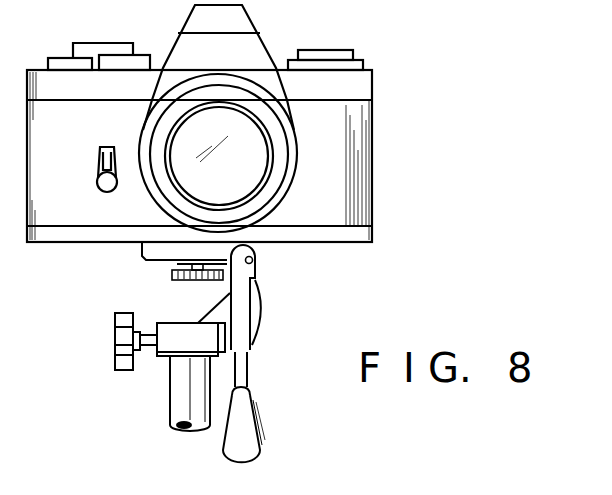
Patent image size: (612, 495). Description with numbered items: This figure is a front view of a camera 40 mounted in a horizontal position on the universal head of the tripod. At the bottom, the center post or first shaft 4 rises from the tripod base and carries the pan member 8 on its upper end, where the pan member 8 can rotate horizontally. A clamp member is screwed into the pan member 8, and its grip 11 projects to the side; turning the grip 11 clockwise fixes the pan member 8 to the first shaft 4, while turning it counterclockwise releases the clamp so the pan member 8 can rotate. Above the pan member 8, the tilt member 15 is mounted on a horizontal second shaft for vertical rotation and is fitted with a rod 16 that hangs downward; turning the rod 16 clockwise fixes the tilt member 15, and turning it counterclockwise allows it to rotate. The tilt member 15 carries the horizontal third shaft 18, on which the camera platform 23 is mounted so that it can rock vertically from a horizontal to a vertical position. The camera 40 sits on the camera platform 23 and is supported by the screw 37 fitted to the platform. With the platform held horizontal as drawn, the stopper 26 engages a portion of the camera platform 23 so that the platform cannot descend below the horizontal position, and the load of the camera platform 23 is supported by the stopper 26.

The camera 40 is at (383, 133).
The camera platform 23 is at (139, 257).
The screw 37 is at (170, 285).
The stopper 26 is at (222, 284).
The tilt member 15 is at (256, 298).
The third shaft 18 is at (253, 260).
The pan member 8 is at (170, 340).
The grip 11 is at (113, 338).
The center post (first shaft) 4 is at (178, 408).
The rod 16 is at (263, 418).